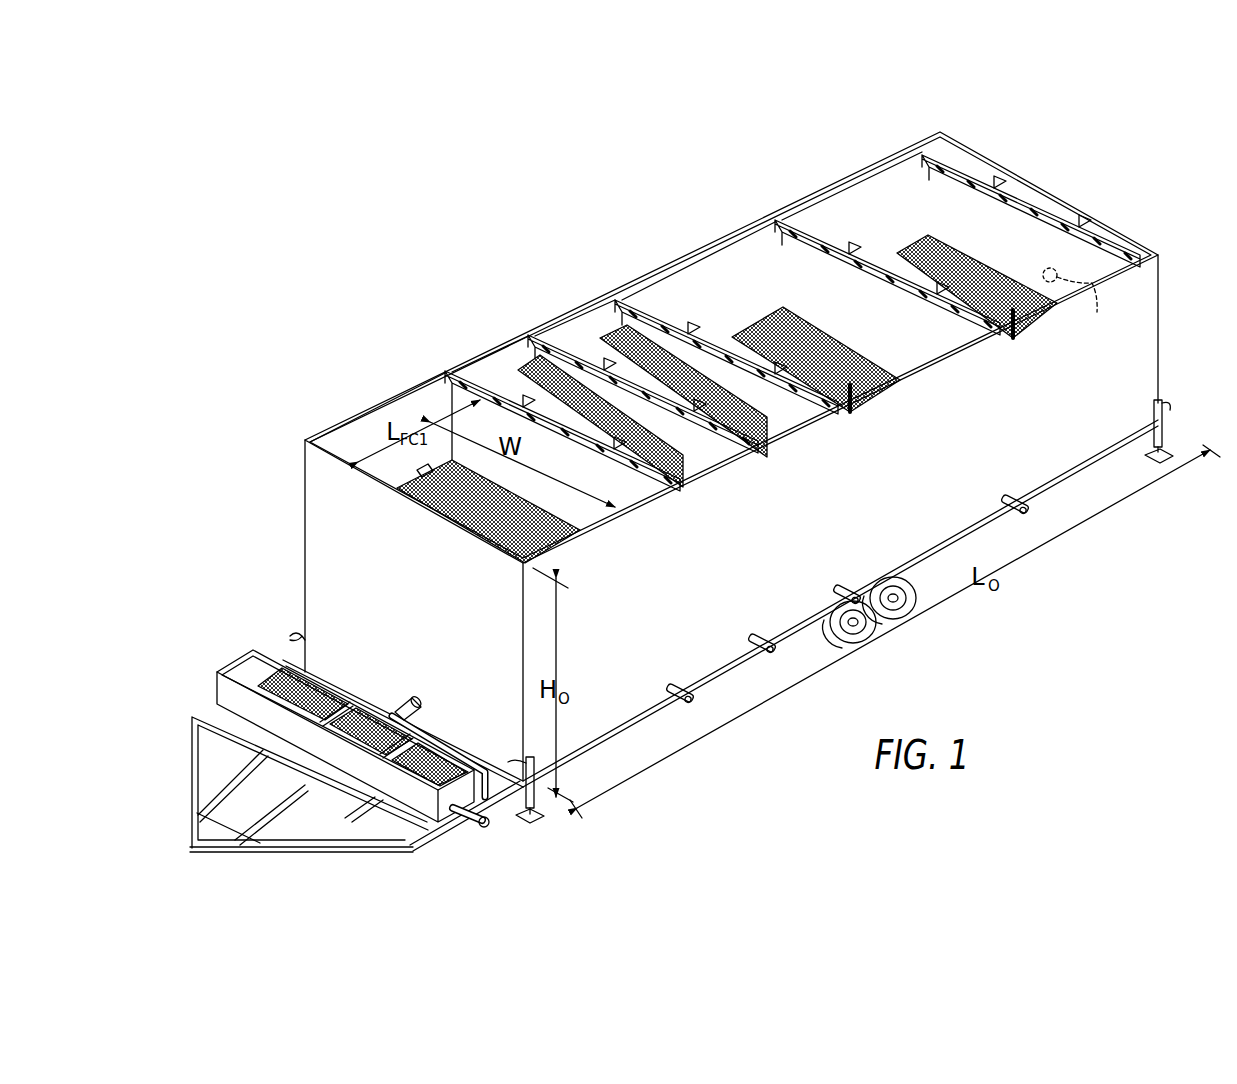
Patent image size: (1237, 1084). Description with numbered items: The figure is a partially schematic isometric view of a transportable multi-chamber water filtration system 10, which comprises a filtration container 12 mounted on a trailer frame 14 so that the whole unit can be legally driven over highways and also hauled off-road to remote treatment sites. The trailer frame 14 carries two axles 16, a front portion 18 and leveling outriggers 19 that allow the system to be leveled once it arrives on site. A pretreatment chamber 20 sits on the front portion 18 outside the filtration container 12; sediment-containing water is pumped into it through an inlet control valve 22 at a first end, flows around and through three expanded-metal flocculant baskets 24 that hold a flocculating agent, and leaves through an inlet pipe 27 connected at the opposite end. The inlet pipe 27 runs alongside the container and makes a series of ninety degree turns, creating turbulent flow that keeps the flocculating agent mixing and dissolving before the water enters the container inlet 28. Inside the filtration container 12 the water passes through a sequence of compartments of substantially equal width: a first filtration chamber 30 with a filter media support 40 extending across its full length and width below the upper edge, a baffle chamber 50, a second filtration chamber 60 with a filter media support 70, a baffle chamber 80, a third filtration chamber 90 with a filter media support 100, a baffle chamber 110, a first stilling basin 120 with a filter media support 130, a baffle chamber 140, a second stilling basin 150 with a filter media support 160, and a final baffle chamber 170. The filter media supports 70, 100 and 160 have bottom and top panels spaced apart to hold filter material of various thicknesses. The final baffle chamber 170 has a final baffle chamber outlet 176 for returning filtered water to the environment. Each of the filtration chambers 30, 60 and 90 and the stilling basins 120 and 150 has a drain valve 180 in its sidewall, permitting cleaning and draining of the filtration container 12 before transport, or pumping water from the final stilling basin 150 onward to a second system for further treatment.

The multi-chamber water filtration system 10 is at (512, 242).
The filtration container 12 is at (615, 652).
The trailer frame 14 is at (430, 840).
The axles 16 is at (868, 640).
The front portion 18 is at (332, 848).
The leveling outriggers 19 is at (1150, 455).
The pretreatment chamber 20 is at (336, 709).
The inlet control valve 22 is at (472, 828).
The flocculant baskets 24 is at (330, 690).
The inlet pipe 27 is at (460, 755).
The container inlet 28 is at (408, 698).
The first filtration chamber 30 is at (432, 390).
The filter media support 40 is at (542, 540).
The baffle chamber 50 is at (450, 368).
The second filtration chamber 60 is at (515, 350).
The filter media support 70 is at (690, 462).
The baffle chamber 80 is at (540, 332).
The third filtration chamber 90 is at (598, 315).
The filter media support 100 is at (776, 428).
The baffle chamber 110 is at (622, 297).
The first stilling basin 120 is at (722, 268).
The filter media support 130 is at (866, 388).
The baffle chamber 140 is at (778, 218).
The second stilling basin 150 is at (880, 182).
The filter media support 160 is at (1023, 308).
The baffle chamber 170 is at (925, 156).
The final baffle chamber outlet 176 is at (1078, 304).
The drain valve 180 is at (835, 610).